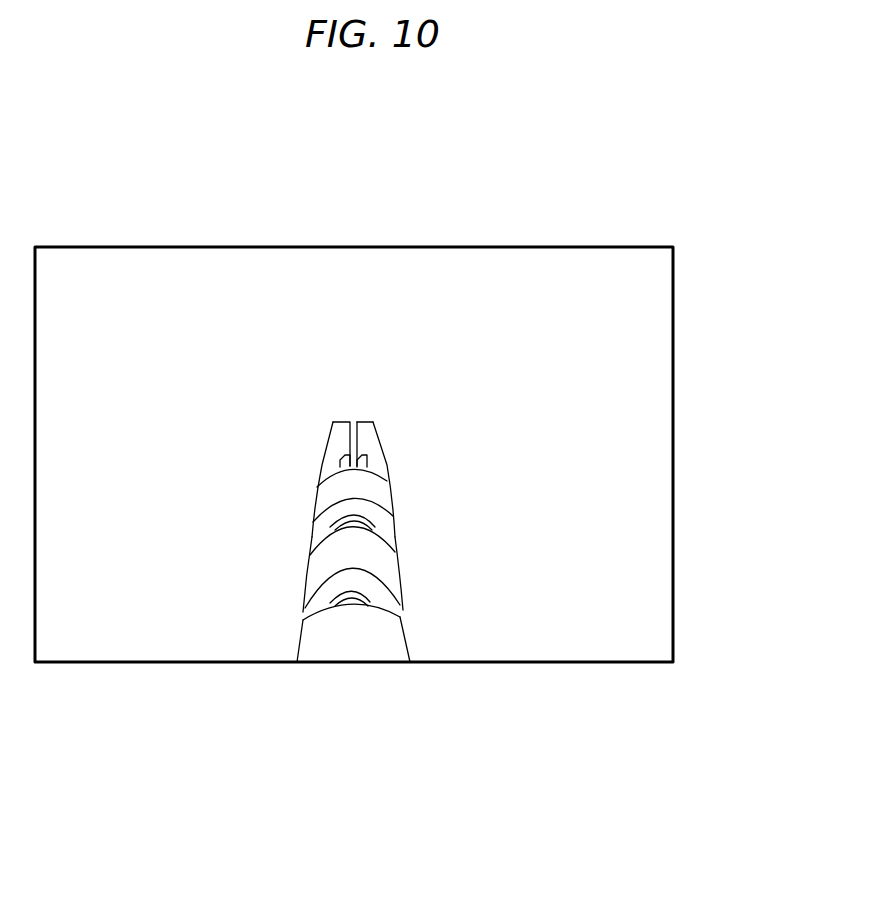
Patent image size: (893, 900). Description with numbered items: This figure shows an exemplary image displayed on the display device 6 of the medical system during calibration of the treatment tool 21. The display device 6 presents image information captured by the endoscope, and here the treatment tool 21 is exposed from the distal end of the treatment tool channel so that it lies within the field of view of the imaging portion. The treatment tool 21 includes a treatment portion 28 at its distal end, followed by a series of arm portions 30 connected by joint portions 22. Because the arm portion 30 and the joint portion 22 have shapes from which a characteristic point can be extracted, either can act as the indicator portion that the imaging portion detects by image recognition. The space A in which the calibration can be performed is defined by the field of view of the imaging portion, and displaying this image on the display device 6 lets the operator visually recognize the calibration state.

The display device 6 is at (547, 246).
The treatment tool 21 is at (265, 485).
The treatment portion 28 is at (364, 432).
The arm portion 30 is at (380, 491).
The joint portion 22 is at (365, 517).
The space A is at (291, 590).